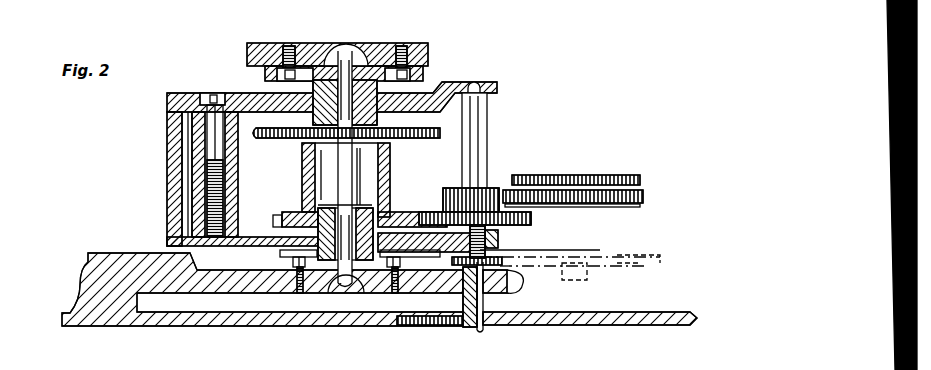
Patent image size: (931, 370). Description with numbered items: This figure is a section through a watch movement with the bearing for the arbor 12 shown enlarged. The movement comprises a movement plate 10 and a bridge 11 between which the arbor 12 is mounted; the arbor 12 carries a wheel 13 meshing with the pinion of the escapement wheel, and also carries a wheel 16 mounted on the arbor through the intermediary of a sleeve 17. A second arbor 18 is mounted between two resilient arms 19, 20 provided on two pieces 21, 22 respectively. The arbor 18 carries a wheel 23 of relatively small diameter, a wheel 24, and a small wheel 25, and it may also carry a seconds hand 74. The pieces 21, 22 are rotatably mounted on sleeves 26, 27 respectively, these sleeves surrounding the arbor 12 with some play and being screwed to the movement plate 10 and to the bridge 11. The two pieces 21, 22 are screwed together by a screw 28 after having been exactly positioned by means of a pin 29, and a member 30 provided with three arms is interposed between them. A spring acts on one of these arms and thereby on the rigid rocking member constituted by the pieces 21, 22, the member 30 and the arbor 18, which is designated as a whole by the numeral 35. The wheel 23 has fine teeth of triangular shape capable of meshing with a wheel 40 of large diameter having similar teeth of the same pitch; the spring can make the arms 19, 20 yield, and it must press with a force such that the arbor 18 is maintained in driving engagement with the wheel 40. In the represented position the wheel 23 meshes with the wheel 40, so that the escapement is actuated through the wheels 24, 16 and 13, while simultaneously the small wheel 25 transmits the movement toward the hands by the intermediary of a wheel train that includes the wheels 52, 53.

The movement plate 10 is at (92, 280).
The bridge 11 is at (378, 45).
The arbor 12 is at (358, 153).
The wheel 13 is at (612, 168).
The wheel 16 is at (277, 218).
The sleeve 17 is at (388, 170).
The arbor 18 is at (477, 110).
The resilient arm 19 is at (499, 240).
The resilient arm 20 is at (497, 83).
The piece 21 is at (170, 223).
The piece 22 is at (172, 125).
The wheel 23 is at (494, 188).
The wheel 24 is at (535, 219).
The small wheel 25 is at (508, 267).
The sleeve 26 is at (276, 263).
The sleeve 27 is at (270, 75).
The screw 28 is at (238, 108).
The pin 29 is at (188, 152).
The member 30 is at (178, 171).
The rocking member 35 is at (235, 203).
The wheel 40 is at (630, 200).
The wheel 52 is at (625, 262).
The wheel 53 is at (590, 282).
The seconds hand 74 is at (404, 322).